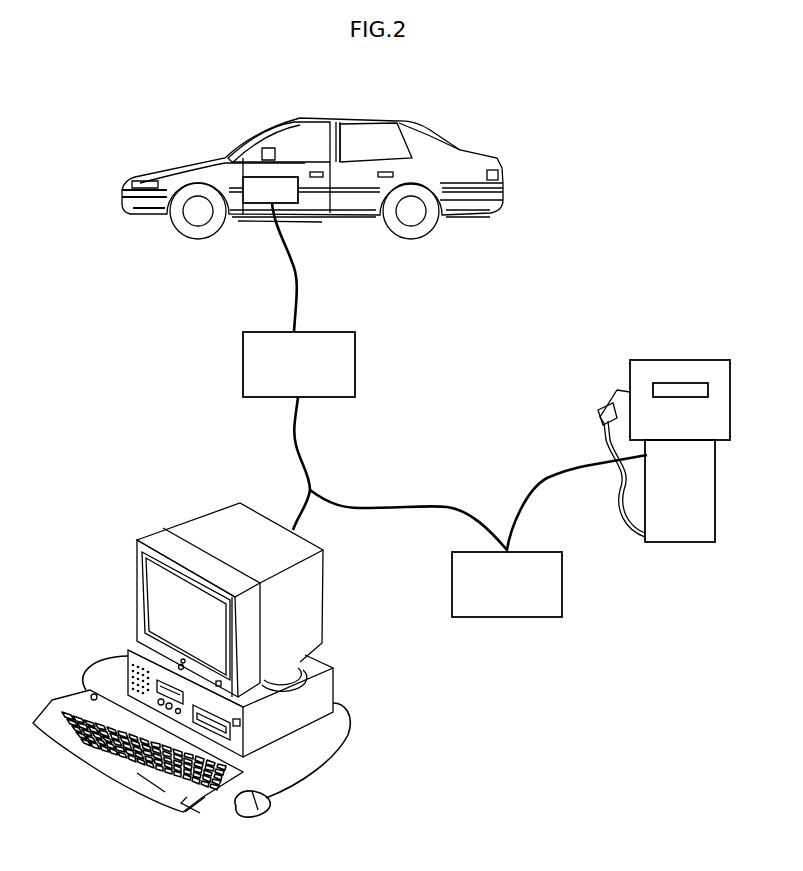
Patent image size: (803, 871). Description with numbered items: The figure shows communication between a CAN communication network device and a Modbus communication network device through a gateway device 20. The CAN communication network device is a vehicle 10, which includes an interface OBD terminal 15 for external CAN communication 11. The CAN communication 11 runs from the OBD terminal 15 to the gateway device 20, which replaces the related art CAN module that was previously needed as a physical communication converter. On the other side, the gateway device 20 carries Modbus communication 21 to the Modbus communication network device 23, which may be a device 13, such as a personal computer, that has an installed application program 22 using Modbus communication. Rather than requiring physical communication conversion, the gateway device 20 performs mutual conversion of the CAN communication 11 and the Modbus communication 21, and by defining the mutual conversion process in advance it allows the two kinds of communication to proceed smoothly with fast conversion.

The vehicle 10 is at (388, 117).
The OBD terminal 15 is at (284, 176).
The CAN communication 11 is at (293, 273).
The gateway device 20 is at (355, 365).
The device 13 is at (190, 525).
The application program 22 is at (152, 600).
The Modbus communication 21 is at (393, 512).
The Modbus communication network device 23 is at (498, 618).